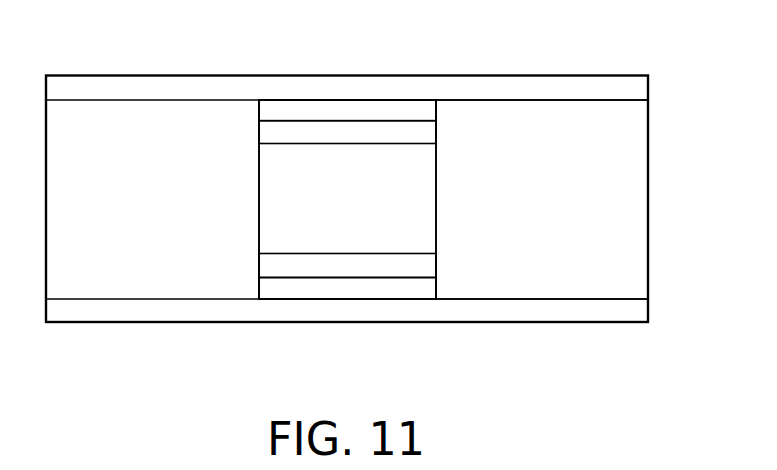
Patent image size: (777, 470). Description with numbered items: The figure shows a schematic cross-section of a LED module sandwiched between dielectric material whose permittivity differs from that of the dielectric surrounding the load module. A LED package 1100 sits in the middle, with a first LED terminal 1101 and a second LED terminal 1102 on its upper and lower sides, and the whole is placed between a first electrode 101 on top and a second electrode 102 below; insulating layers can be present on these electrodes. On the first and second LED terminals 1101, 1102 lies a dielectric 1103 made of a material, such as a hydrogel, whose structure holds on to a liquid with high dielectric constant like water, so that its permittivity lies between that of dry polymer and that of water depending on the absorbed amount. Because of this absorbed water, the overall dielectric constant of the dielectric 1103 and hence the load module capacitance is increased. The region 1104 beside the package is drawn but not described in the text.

The first electrode 101 is at (548, 88).
The second electrode 102 is at (549, 312).
The LED package 1100 is at (414, 199).
The first LED terminal 1101 is at (307, 133).
The second LED terminal 1102 is at (309, 263).
The dielectric 1103 is at (387, 113).
The side cavity region 1104 is at (637, 199).